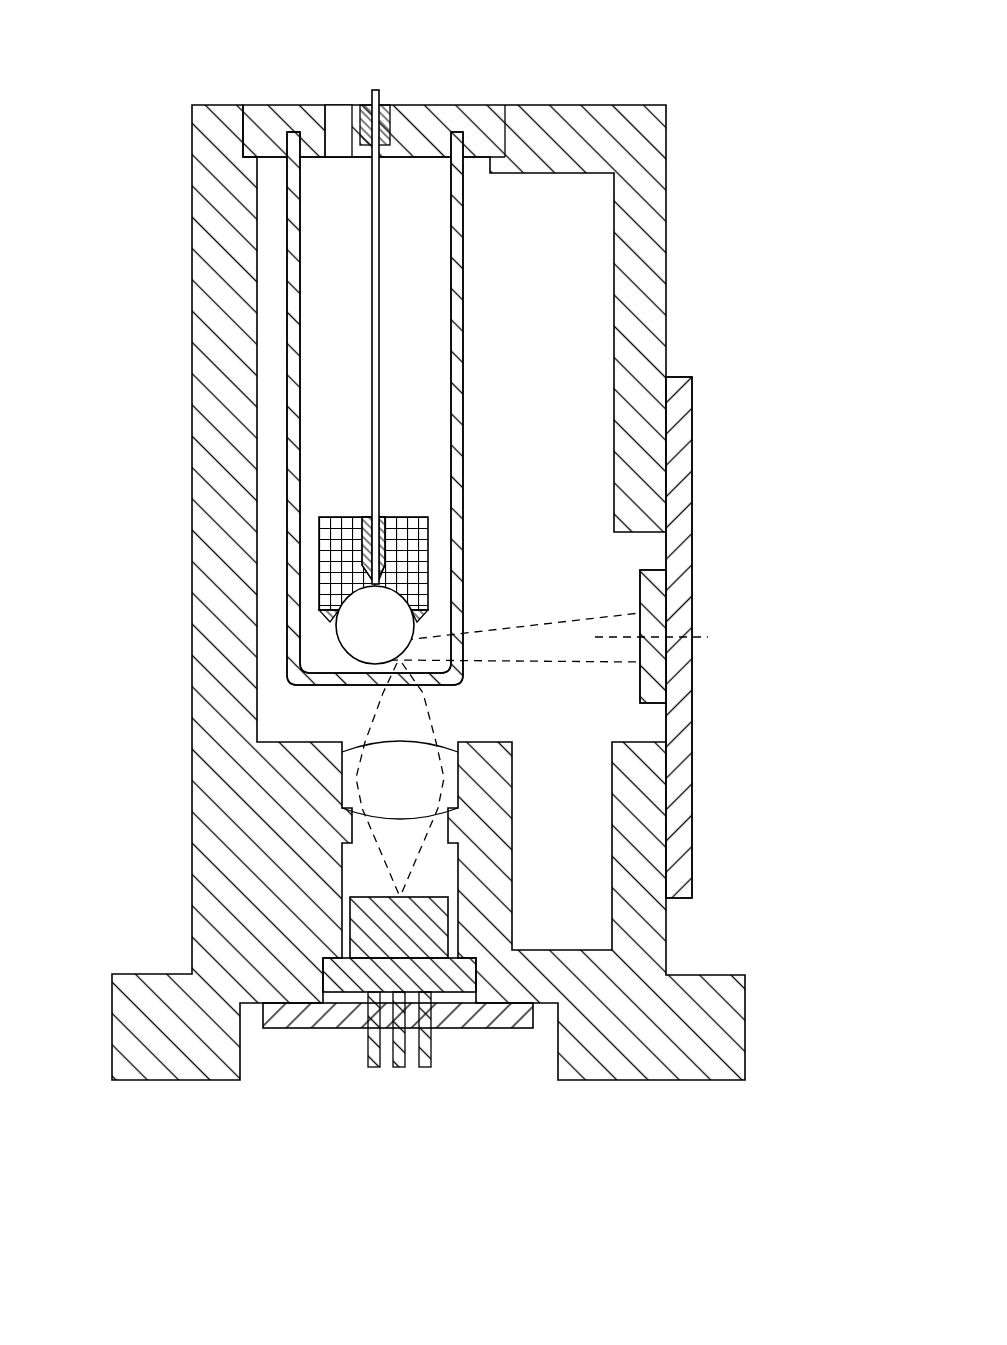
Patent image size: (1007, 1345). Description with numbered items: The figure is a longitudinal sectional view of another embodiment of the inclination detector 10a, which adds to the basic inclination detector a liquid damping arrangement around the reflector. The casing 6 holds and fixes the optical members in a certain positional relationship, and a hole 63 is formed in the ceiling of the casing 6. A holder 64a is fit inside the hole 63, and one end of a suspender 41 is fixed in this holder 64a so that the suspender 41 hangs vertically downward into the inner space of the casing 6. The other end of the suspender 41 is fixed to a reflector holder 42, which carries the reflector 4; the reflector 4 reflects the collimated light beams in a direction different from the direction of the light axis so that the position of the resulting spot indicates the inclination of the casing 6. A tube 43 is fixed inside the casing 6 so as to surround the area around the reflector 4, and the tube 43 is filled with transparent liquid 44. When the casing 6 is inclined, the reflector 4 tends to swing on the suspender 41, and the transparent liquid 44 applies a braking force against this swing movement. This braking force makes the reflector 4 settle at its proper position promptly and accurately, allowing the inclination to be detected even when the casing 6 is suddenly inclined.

The inclination detector 10a is at (700, 98).
The casing 6 is at (202, 241).
The hole 63 is at (493, 128).
The holder 64a is at (298, 120).
The tube 43 is at (291, 427).
The transparent liquid 44 is at (328, 492).
The reflector holder 42 is at (330, 567).
The reflector 4 is at (343, 640).
The suspender 41 is at (372, 355).